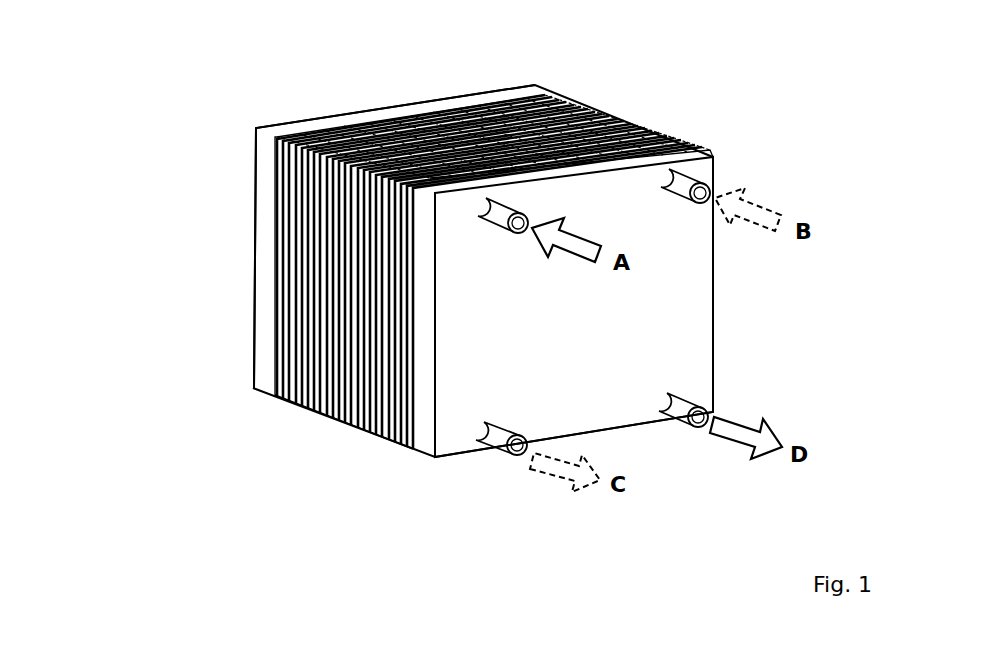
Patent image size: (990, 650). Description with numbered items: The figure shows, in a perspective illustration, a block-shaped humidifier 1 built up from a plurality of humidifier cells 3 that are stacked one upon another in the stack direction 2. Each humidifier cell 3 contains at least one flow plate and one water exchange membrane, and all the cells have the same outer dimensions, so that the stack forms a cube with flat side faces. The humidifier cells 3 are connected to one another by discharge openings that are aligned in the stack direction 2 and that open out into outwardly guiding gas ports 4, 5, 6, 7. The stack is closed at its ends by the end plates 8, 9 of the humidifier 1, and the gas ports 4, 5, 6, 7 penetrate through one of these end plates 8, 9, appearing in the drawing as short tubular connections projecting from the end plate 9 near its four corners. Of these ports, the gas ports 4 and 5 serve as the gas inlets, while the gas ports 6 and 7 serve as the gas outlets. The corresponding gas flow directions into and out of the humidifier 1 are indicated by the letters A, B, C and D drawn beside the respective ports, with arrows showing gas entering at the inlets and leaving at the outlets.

The humidifier 1 is at (735, 91).
The stack direction 2 is at (757, 357).
The humidifier cells 3 is at (634, 96).
The gas port 4 is at (492, 212).
The gas port 5 is at (678, 182).
The gas port 6 is at (492, 435).
The gas port 7 is at (677, 402).
The end plate 8 is at (265, 375).
The end plate 9 is at (420, 432).